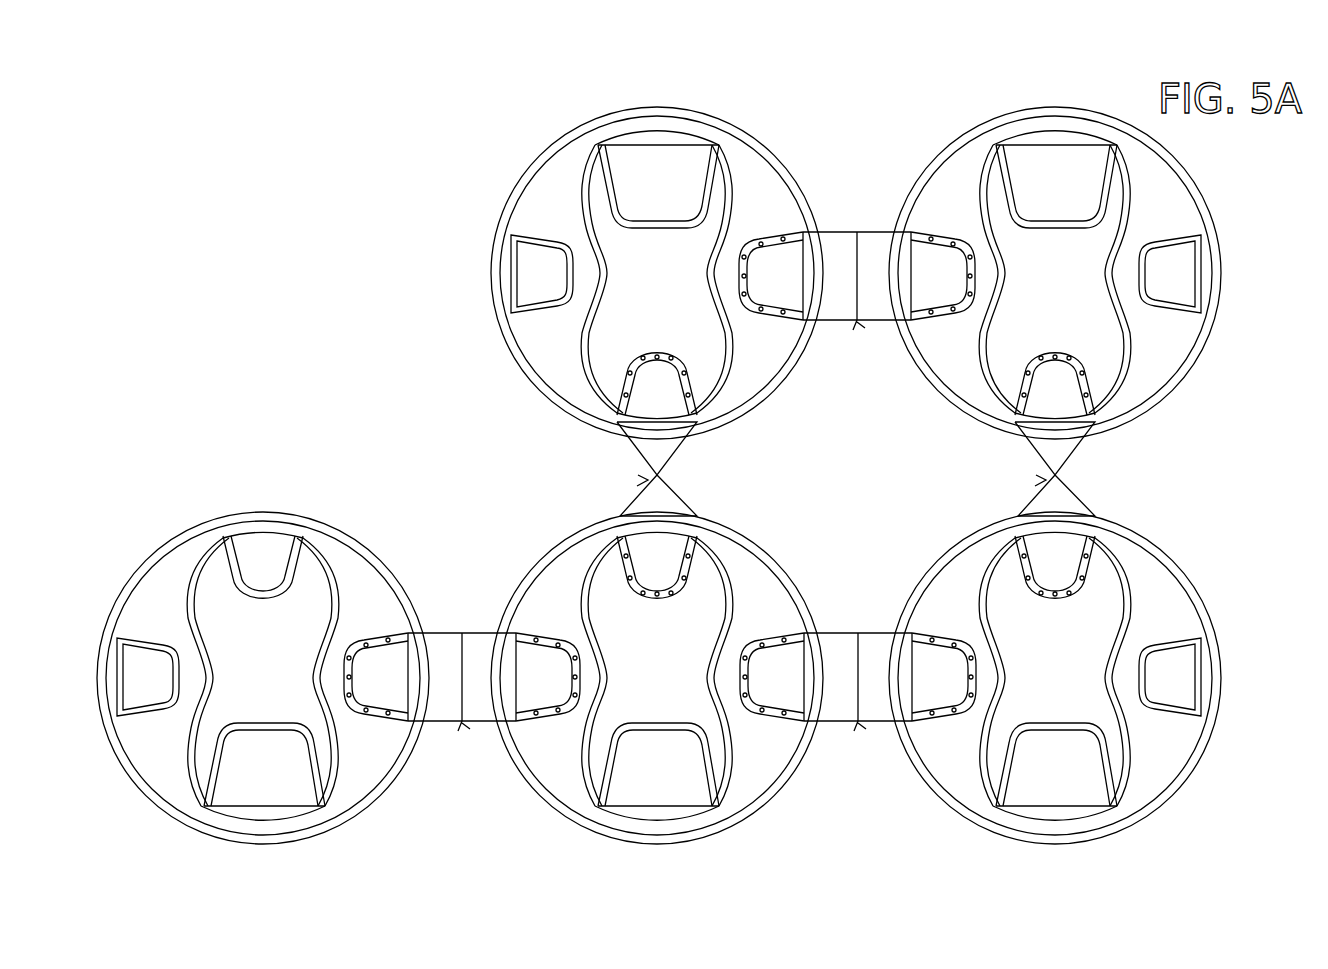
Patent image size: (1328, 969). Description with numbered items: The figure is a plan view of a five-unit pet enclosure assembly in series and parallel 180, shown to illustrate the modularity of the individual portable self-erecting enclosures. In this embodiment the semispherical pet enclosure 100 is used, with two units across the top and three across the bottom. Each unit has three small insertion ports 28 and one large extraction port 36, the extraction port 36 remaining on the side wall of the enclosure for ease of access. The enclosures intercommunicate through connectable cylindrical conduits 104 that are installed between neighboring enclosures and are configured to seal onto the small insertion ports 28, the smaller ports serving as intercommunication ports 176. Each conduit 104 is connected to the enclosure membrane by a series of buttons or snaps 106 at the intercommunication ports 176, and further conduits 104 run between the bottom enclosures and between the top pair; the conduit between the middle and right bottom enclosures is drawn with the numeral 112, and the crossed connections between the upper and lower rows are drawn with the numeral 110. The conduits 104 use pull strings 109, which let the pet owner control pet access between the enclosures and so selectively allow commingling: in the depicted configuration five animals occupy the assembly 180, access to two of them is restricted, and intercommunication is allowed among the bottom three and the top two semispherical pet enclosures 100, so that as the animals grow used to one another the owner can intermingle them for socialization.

The 5-unit pet enclosure assembly in series and parallel 180 is at (497, 132).
The semispherical pet enclosure 100 is at (507, 188).
The extraction port 36 is at (633, 165).
The small insertion port 28 is at (520, 272).
The intercommunication port 176 is at (927, 257).
The buttons or snaps 106 is at (933, 308).
The pull string 109 is at (853, 252).
The connecting tab 110 is at (683, 504).
The cylindrical conduit 104 is at (464, 633).
The connector 112 is at (858, 633).